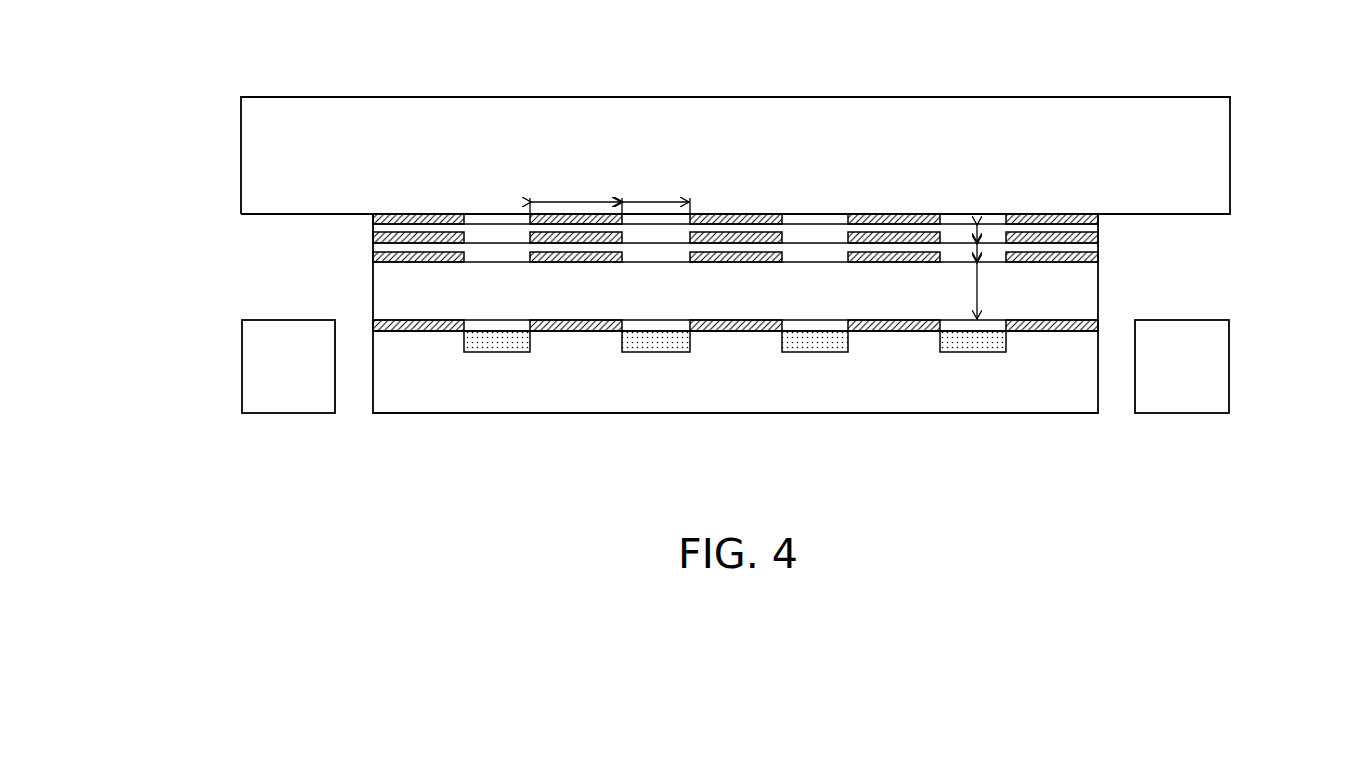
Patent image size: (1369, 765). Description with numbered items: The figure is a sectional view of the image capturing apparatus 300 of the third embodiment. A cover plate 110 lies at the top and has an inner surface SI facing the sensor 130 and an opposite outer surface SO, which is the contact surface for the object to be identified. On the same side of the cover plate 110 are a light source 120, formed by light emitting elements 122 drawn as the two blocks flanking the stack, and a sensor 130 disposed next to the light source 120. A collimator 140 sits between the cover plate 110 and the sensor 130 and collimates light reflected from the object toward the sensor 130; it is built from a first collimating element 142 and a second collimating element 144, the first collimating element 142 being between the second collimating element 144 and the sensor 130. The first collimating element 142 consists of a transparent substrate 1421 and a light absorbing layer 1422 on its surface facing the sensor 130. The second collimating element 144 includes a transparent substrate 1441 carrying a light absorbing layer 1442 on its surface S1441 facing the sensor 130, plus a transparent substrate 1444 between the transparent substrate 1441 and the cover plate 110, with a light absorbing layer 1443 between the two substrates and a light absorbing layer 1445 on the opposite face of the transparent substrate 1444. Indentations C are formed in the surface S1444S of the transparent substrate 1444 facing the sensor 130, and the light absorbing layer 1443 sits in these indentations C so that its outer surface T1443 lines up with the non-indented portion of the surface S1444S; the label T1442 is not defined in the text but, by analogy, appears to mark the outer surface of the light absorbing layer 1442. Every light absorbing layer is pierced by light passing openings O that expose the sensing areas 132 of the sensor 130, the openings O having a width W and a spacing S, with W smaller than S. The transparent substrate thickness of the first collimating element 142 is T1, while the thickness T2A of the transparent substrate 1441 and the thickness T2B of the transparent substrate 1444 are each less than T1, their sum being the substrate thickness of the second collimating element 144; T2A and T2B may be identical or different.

The cover plate 110 is at (1222, 183).
The light source 120 is at (735, 366).
The light emitting elements 122 is at (243, 374).
The sensor 130 is at (1037, 404).
The sensing areas 132 is at (973, 340).
The collimator 140 is at (254, 217).
The first collimating element 142 is at (299, 269).
The second collimating element 144 is at (299, 145).
The transparent substrate 1421 is at (378, 294).
The light absorbing layer 1422 is at (373, 325).
The transparent substrate 1441 is at (373, 247).
The light absorbing layer 1442 is at (373, 257).
The light absorbing layer 1443 is at (373, 237).
The transparent substrate 1444 is at (373, 228).
The light absorbing layer 1445 is at (373, 218).
The image capturing apparatus 300 is at (1290, 542).
The outer surface SO is at (268, 94).
The inner surface SI is at (240, 217).
The spacing between light passing openings S is at (576, 194).
The width of light passing opening W is at (656, 194).
The light passing openings O is at (838, 320).
The indentations C is at (942, 257).
The transparent substrate thickness of first collimating element T1 is at (990, 291).
The thickness of transparent substrate 1441 T2A is at (980, 252).
The thickness of transparent substrate 1444 T2B is at (980, 233).
The surface of transparent substrate S1441 is at (677, 266).
The surface of transparent substrate S1444S is at (490, 246).
The outer surface of light absorbing layer T1443 is at (540, 246).
The thickness of layer 1442 T1442 is at (598, 265).